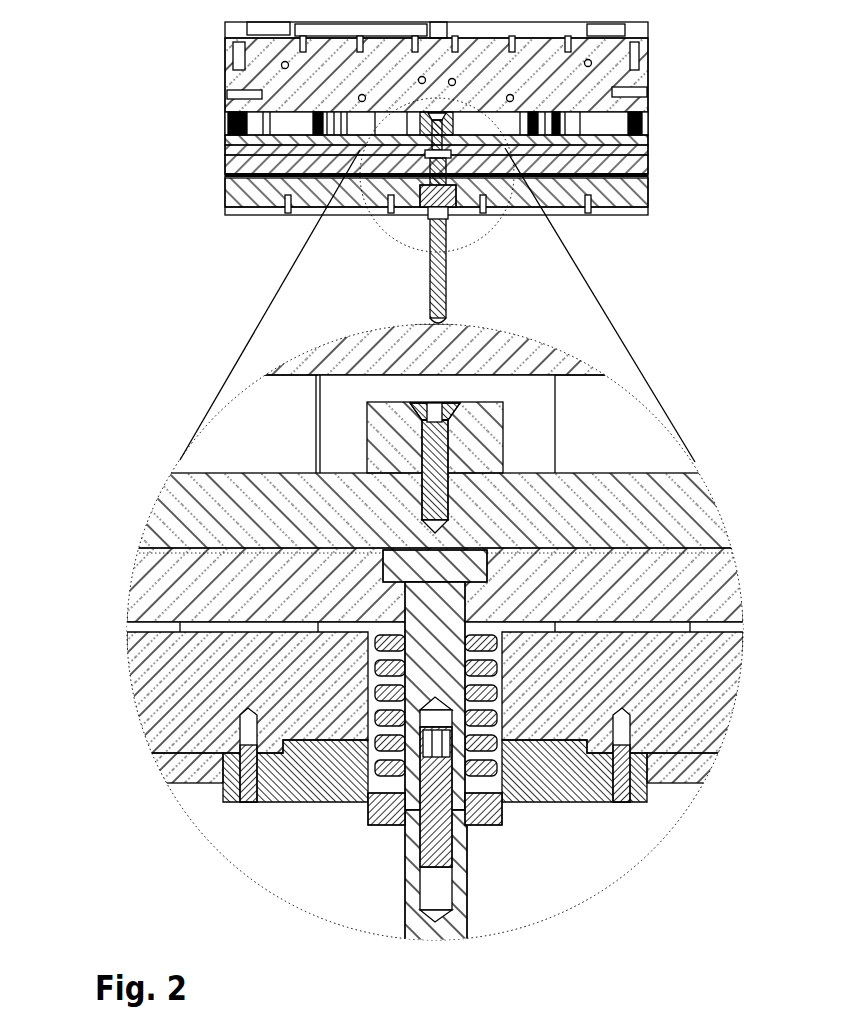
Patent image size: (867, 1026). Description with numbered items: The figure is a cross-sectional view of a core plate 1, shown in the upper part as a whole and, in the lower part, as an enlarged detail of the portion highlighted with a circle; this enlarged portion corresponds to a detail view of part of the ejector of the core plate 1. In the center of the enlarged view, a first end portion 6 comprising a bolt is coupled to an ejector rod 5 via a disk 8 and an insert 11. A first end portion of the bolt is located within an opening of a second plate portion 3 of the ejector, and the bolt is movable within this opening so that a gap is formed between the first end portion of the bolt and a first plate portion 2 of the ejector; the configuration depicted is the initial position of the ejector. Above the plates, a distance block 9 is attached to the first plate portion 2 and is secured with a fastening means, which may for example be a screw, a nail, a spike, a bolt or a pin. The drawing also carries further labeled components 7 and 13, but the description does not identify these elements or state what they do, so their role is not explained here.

The core plate 1 is at (668, 125).
The first plate portion 2 is at (197, 538).
The second plate portion 3 is at (170, 598).
The ejector rod 5 is at (403, 903).
The first end portion 6 is at (460, 607).
The spring 7 is at (380, 712).
The disk 8 is at (385, 812).
The distance block 9 is at (383, 458).
The insert 11 is at (438, 838).
The screw 13 is at (448, 443).